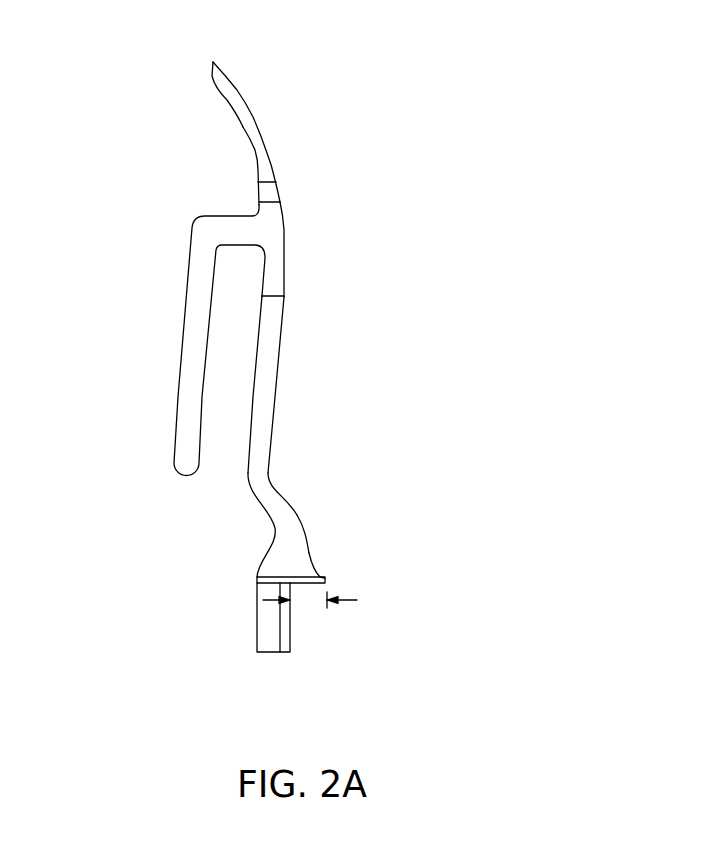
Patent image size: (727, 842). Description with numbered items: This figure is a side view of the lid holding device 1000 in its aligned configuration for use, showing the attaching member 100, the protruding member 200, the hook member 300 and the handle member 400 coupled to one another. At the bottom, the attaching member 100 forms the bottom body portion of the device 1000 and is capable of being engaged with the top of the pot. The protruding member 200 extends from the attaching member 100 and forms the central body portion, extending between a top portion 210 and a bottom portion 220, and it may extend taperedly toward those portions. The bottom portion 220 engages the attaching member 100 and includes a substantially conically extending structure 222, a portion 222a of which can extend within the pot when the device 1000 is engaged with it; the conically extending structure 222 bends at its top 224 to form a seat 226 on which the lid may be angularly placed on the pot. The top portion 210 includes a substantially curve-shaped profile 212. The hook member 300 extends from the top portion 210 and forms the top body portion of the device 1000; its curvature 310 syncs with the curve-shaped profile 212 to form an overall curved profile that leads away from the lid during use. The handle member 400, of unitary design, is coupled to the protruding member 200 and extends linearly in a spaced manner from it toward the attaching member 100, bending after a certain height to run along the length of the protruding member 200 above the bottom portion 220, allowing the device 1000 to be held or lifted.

The lid holding device 1000 is at (450, 97).
The hook member 300 is at (245, 88).
The curvature 310 is at (262, 132).
The protruding member 200 is at (427, 578).
The substantially curve-shaped profile 212 is at (290, 215).
The top portion 210 is at (295, 278).
The seat 226 is at (282, 483).
The top of the conically extending structure 224 is at (297, 502).
The bottom portion 220 is at (305, 527).
The substantially conically extending structure 222 is at (317, 560).
The portion of the conical structure 222a is at (313, 601).
The handle member 400 is at (176, 372).
The attaching member 100 is at (224, 590).